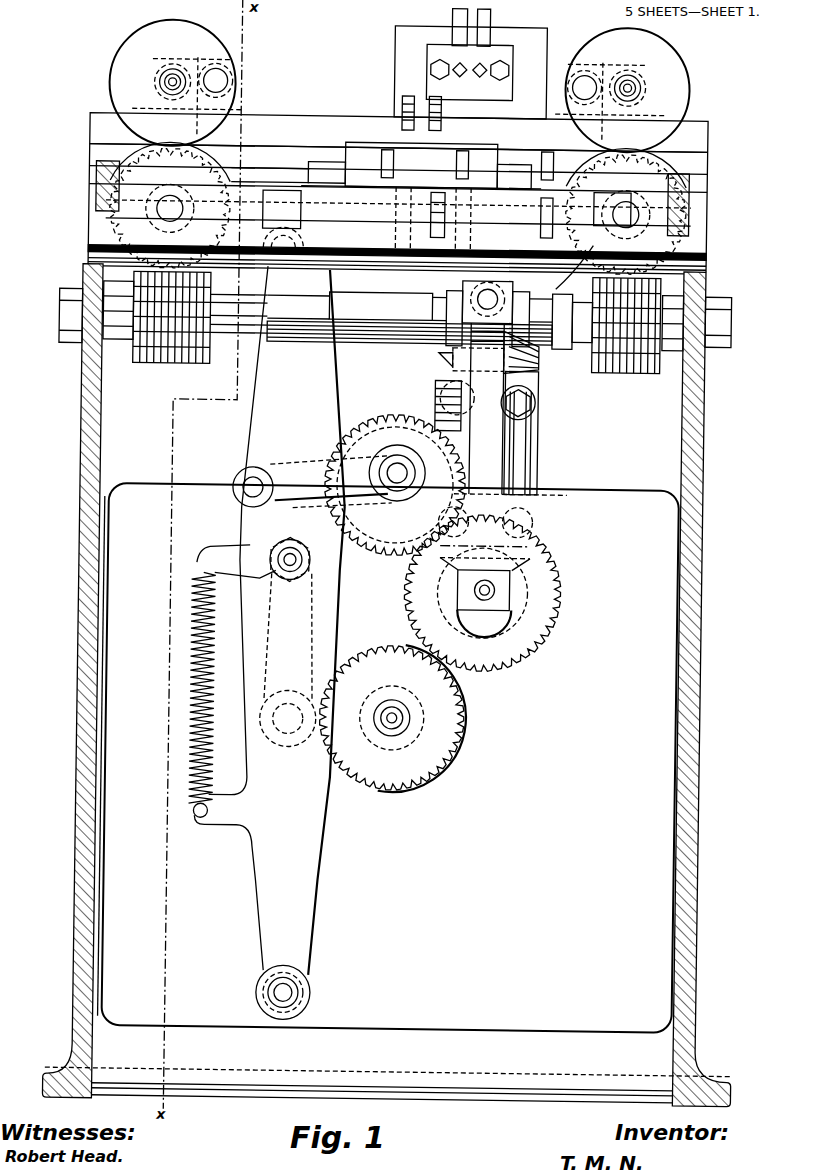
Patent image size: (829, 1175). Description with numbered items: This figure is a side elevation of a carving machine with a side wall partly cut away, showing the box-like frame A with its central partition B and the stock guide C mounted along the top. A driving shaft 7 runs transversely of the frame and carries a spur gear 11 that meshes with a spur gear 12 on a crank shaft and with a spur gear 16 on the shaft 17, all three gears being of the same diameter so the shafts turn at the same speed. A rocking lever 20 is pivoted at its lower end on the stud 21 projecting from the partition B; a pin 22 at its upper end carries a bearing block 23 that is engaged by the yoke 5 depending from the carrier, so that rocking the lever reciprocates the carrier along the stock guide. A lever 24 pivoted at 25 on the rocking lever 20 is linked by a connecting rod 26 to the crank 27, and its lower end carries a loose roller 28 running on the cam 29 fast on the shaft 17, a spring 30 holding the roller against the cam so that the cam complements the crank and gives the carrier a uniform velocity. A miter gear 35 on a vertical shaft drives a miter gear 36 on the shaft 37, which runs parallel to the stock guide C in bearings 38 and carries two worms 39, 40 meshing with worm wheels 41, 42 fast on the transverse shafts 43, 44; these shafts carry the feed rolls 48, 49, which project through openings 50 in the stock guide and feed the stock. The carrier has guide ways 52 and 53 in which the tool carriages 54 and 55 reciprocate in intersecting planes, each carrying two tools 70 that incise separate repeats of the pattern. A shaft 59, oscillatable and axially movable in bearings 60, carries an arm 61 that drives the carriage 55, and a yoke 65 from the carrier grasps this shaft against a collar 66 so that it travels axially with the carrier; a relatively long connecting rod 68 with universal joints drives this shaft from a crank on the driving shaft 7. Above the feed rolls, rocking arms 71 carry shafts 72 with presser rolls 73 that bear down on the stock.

The box-like frame A is at (675, 858).
The partition B is at (612, 497).
The stock guide C is at (335, 117).
The yoke 5 is at (340, 292).
The driving shaft 7 is at (520, 607).
The spur gear 11 is at (548, 566).
The spur gear 12 is at (355, 440).
The spur gear 16 is at (372, 648).
The shaft 17 is at (400, 707).
The rocking lever 20 is at (270, 620).
The stud 21 is at (305, 988).
The pin 22 is at (293, 209).
The bearing block 23 is at (340, 252).
The lever 24 is at (330, 610).
The pivot 25 is at (290, 576).
The connecting rod 26 is at (340, 456).
The crank 27 is at (393, 494).
The loose roller 28 is at (270, 742).
The cam 29 is at (455, 782).
The spring 30 is at (196, 703).
The miter gear 35 is at (537, 401).
The miter gear 36 is at (535, 352).
The shaft 37 is at (378, 343).
The bearings 38 is at (70, 347).
The worm 39 is at (170, 366).
The worm 40 is at (640, 370).
The worm wheel 41 is at (130, 226).
The worm wheel 42 is at (690, 224).
The shaft 43 is at (135, 212).
The shaft 44 is at (690, 196).
The feed roll 48 is at (200, 148).
The feed roll 49 is at (600, 172).
The openings 50 is at (220, 156).
The guide ways 52 is at (405, 78).
The guide ways 53 is at (345, 163).
The tool carriage 54 is at (440, 38).
The tool carriage 55 is at (420, 196).
The shaft 59 is at (240, 300).
The bearings 60 is at (118, 343).
The arm 61 is at (400, 300).
The yoke 65 is at (581, 257).
The collar 66 is at (570, 342).
The connecting rod 68 is at (503, 409).
The tools 70 is at (432, 192).
The rocking arms 71 is at (200, 62).
The shafts 72 is at (170, 72).
The presser rolls 73 is at (400, 86).